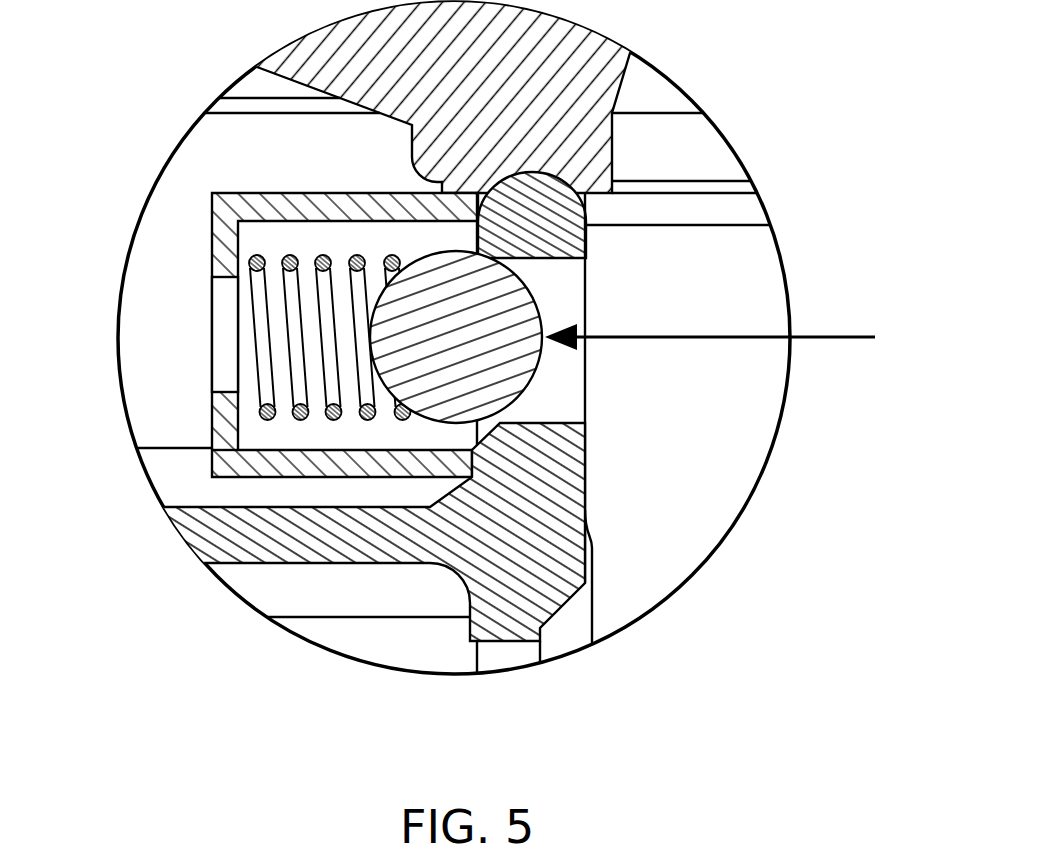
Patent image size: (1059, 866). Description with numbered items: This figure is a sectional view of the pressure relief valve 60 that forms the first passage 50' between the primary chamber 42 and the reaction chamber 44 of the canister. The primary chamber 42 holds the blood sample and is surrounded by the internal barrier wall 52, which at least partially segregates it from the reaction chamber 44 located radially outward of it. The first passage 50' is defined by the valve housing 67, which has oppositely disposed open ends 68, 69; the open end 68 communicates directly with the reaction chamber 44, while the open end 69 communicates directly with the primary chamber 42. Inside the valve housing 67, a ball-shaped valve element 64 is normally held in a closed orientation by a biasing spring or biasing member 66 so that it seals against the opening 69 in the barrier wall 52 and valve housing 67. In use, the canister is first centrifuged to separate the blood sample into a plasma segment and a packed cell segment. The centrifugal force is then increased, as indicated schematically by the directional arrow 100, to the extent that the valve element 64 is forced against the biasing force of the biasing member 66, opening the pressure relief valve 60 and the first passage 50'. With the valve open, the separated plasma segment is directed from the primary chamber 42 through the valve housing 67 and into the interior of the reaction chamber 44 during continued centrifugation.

The primary chamber 42 is at (725, 497).
The reaction chamber 44 is at (198, 166).
The first passage 50' is at (380, 96).
The internal barrier wall 52 is at (587, 507).
The pressure relief valve 60 is at (157, 271).
The valve element 64 is at (534, 298).
The biasing member 66 is at (238, 413).
The valve housing 67 is at (213, 458).
The open end 68 is at (223, 350).
The open end 69 is at (488, 426).
The directional arrow 100 is at (722, 336).